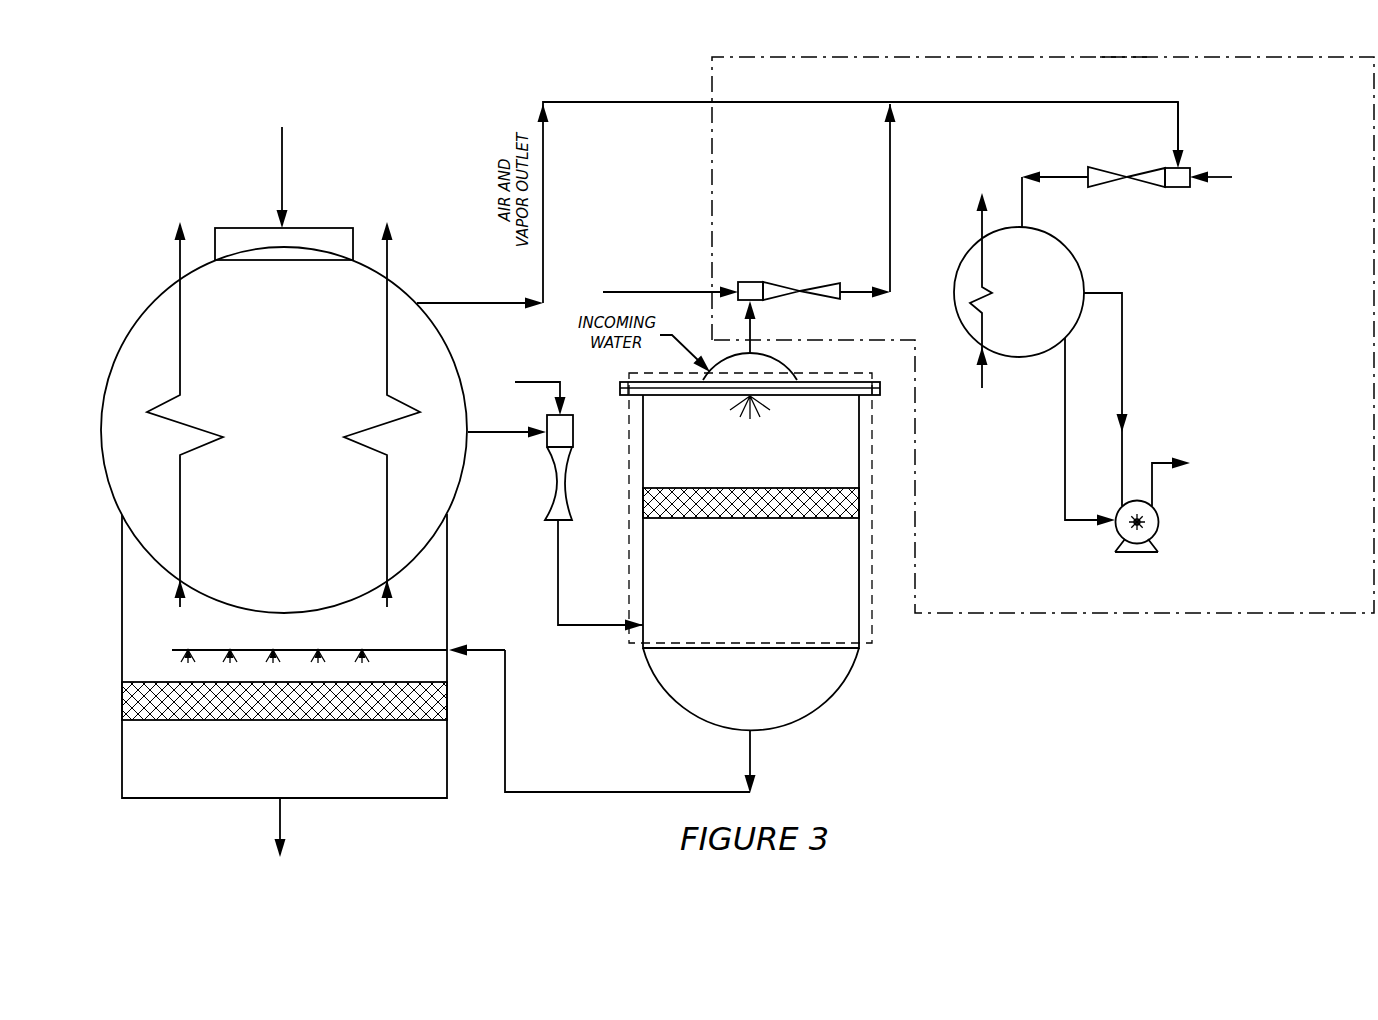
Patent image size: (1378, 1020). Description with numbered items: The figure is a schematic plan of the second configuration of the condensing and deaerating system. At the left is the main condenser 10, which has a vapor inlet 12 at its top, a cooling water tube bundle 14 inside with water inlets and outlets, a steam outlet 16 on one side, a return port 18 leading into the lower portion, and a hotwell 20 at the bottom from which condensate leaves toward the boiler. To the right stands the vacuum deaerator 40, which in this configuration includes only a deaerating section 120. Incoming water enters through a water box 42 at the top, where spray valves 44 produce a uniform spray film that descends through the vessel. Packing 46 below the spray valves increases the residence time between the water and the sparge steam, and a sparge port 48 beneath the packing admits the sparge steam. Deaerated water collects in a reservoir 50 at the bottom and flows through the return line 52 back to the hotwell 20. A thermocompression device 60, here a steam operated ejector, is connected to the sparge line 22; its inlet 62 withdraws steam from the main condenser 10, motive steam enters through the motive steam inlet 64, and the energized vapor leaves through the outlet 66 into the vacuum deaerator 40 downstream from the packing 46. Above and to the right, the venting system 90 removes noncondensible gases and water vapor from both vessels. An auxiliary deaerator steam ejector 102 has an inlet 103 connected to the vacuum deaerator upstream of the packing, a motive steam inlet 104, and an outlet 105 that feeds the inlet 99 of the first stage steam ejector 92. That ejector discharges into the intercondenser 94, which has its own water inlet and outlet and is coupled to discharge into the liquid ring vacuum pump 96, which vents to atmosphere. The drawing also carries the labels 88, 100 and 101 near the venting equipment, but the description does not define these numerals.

The main condenser 10 is at (279, 430).
The vapor inlet 12 is at (299, 171).
The cooling water tube bundle 14 is at (262, 412).
The steam outlet 16 is at (507, 447).
The return port 18 is at (477, 639).
The hotwell 20 is at (170, 747).
The sparge line 22 is at (600, 595).
The vacuum deaerator 40 is at (784, 515).
The water box 42 is at (775, 362).
The spray valves 44 is at (788, 419).
The packing 46 is at (775, 501).
The sparge port 48 is at (614, 650).
The reservoir 50 is at (768, 720).
The return line 52 is at (627, 738).
The thermocompression device 60 is at (578, 483).
The inlet 62 is at (527, 469).
The motive steam inlet 64 is at (562, 412).
The outlet 66 is at (534, 543).
The air removal system boundary 88 is at (1043, 320).
The venting system 90 is at (1136, 52).
The first stage steam ejector 92 is at (1135, 195).
The intercondenser 94 is at (1043, 335).
The liquid ring vacuum pump 96 is at (1207, 508).
The inlet 99 is at (1209, 135).
The second stage ejector 100 is at (1256, 198).
The second ejector diffuser 101 is at (1074, 177).
The auxiliary deaerator steam ejector 102 is at (801, 275).
The inlet 103 is at (780, 327).
The motive steam inlet 104 is at (668, 258).
The outlet 105 is at (872, 310).
The deaerating section 120 is at (775, 508).